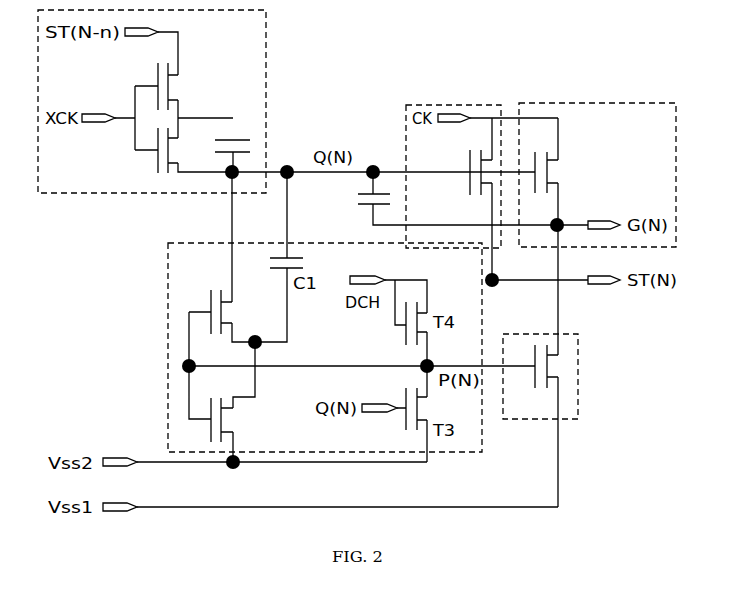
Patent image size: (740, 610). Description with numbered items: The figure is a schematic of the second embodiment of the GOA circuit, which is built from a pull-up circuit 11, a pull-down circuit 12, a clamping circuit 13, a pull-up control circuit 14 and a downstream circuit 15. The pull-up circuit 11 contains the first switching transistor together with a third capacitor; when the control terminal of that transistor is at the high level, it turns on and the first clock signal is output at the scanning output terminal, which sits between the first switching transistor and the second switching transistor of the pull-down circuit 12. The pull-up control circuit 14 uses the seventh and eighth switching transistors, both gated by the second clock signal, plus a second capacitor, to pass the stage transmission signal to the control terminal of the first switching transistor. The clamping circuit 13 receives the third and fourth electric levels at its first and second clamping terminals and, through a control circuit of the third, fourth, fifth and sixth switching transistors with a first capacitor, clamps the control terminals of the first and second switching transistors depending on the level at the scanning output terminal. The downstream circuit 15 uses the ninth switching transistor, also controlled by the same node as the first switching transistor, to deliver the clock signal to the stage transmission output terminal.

The pull-up circuit 11 is at (522, 103).
The pull-down circuit 12 is at (578, 400).
The clamping circuit 13 is at (168, 258).
The pull-up control circuit 14 is at (266, 55).
The downstream circuit 15 is at (417, 103).